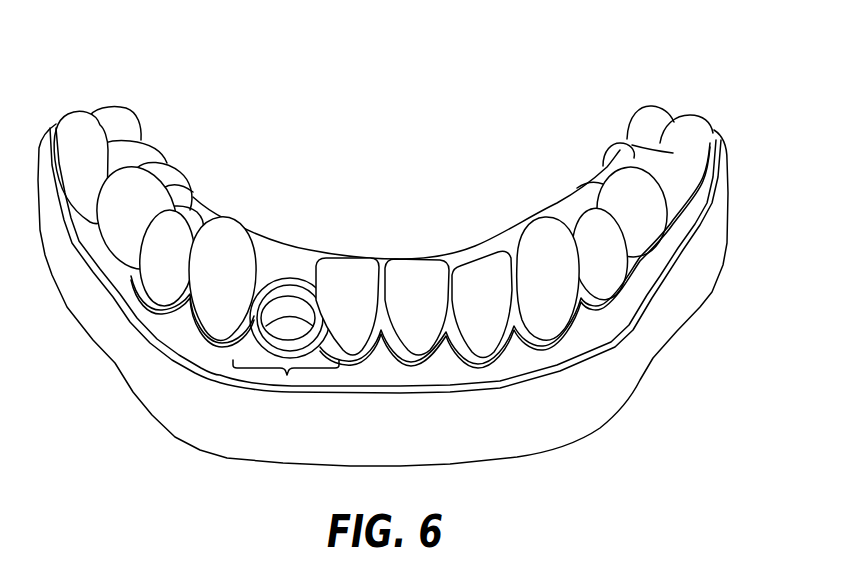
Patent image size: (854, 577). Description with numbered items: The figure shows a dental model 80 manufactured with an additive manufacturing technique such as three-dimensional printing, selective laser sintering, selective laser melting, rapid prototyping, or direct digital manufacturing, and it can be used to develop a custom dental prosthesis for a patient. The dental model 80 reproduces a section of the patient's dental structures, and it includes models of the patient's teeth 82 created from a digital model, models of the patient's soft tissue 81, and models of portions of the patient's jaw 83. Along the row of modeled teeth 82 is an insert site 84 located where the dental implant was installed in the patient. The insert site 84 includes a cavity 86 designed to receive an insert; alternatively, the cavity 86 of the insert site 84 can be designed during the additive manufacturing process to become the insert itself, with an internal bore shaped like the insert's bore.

The dental model 80 is at (133, 55).
The soft tissue 81 is at (597, 328).
The teeth 82 is at (490, 323).
The jaw 83 is at (697, 270).
The insert site 84 is at (286, 375).
The cavity 86 is at (289, 306).